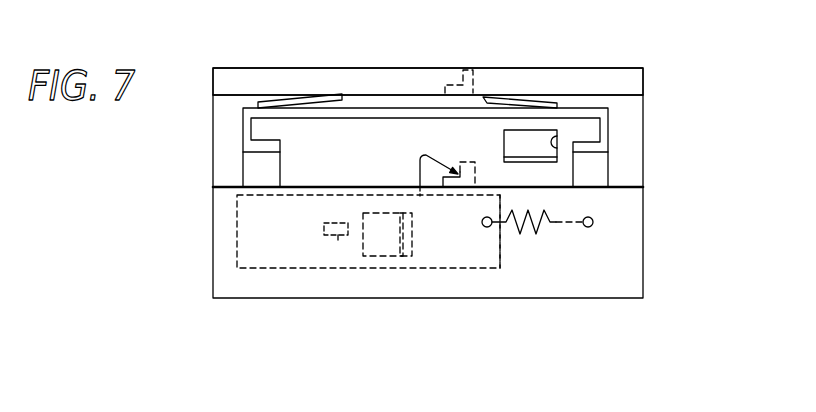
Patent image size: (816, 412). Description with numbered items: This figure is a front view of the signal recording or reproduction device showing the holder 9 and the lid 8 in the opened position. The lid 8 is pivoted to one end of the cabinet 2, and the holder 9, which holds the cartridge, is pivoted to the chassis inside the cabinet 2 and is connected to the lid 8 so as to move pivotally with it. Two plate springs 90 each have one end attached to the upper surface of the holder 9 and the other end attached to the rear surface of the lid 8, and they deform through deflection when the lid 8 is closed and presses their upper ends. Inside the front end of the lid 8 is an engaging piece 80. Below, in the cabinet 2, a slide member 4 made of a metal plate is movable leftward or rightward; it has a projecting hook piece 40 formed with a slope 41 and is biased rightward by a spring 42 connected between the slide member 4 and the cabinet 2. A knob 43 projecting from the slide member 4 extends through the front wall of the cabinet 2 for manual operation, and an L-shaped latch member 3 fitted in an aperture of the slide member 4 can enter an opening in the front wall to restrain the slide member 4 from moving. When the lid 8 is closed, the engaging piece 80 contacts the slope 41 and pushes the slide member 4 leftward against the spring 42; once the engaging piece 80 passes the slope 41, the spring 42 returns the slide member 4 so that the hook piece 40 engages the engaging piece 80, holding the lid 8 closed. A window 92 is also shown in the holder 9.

The cabinet 2 is at (643, 257).
The latch member 3 is at (382, 243).
The slide member 4 is at (500, 252).
The lid 8 is at (598, 78).
The holder 9 is at (605, 128).
The hook piece 40 is at (426, 155).
The slope 41 is at (458, 171).
The spring 42 is at (593, 225).
The knob 43 is at (338, 240).
The engaging piece 80 is at (472, 64).
The plate springs 90 is at (317, 96).
The window 92 is at (557, 147).